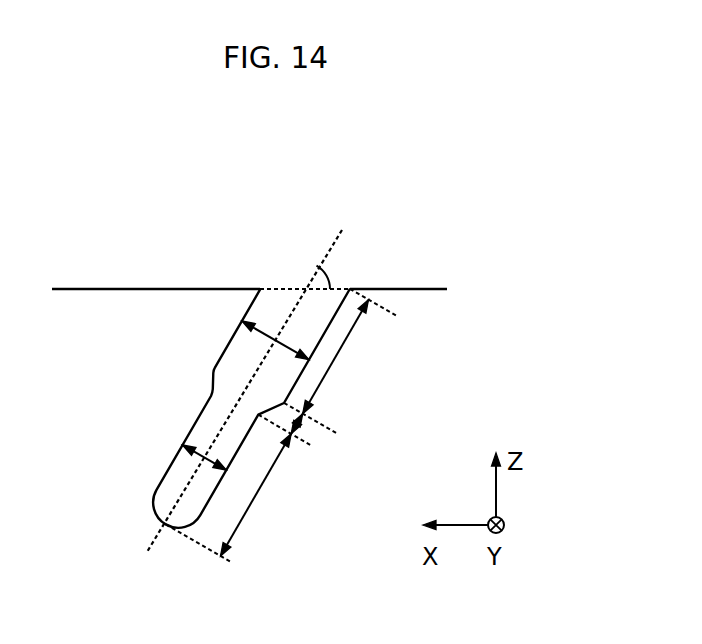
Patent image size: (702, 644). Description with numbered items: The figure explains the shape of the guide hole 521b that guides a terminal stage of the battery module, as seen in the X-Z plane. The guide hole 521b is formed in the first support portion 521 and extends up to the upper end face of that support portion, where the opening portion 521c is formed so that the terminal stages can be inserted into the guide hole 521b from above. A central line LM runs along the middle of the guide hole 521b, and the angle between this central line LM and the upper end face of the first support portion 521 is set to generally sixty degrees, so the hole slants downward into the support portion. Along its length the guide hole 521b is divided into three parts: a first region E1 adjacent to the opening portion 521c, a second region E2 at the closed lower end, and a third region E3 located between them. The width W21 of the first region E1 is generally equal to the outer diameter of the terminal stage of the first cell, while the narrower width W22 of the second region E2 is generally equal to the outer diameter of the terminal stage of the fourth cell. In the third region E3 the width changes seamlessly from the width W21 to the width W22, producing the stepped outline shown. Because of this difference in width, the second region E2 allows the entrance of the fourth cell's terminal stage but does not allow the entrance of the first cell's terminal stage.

The first support portion 521 is at (96, 307).
The guide hole 521b is at (203, 408).
The opening portion 521c is at (270, 284).
The central line LM is at (325, 255).
The width of the first region W21 is at (248, 342).
The width of the second region W22 is at (197, 461).
The first region E1 is at (334, 365).
The second region E2 is at (253, 497).
The third region E3 is at (300, 424).